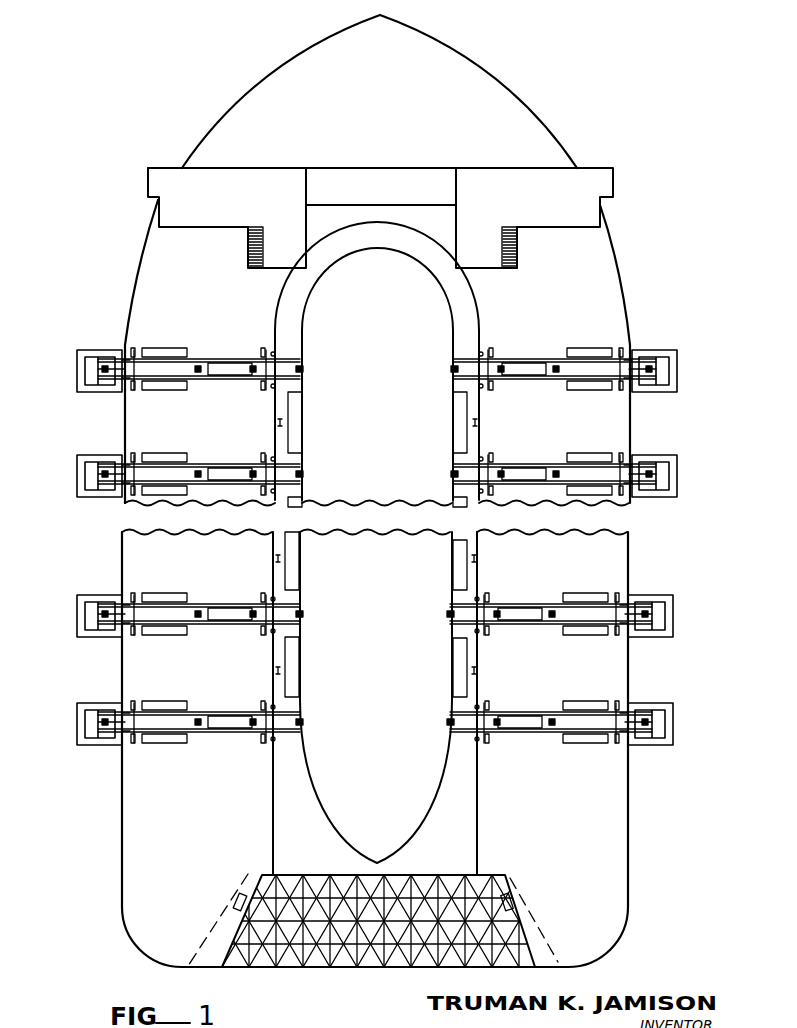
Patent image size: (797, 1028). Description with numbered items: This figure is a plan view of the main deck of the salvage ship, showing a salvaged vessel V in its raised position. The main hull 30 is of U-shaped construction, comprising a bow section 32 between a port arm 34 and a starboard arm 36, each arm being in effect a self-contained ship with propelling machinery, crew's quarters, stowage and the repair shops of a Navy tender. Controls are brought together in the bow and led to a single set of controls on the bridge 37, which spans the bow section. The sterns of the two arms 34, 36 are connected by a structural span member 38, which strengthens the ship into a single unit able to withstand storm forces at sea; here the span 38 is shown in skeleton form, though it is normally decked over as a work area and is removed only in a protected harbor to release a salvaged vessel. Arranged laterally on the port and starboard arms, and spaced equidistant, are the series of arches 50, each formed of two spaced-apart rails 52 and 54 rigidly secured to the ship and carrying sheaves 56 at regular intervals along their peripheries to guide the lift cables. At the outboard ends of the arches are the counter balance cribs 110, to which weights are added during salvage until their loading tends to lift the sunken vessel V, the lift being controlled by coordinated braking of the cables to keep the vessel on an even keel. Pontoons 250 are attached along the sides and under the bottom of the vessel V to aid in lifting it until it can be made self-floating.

The main hull 30 is at (138, 278).
The bow section 32 is at (263, 75).
The port arm 34 is at (135, 790).
The starboard arm 36 is at (615, 810).
The bridge 37 is at (292, 175).
The structural span member 38 is at (350, 967).
The arches 50 is at (255, 470).
The rail 52 is at (203, 352).
The rail 54 is at (203, 380).
The sheaves 56 is at (550, 613).
The counter balance cribs 110 is at (672, 377).
The pontoons 250 is at (460, 423).
The vessel V is at (386, 471).